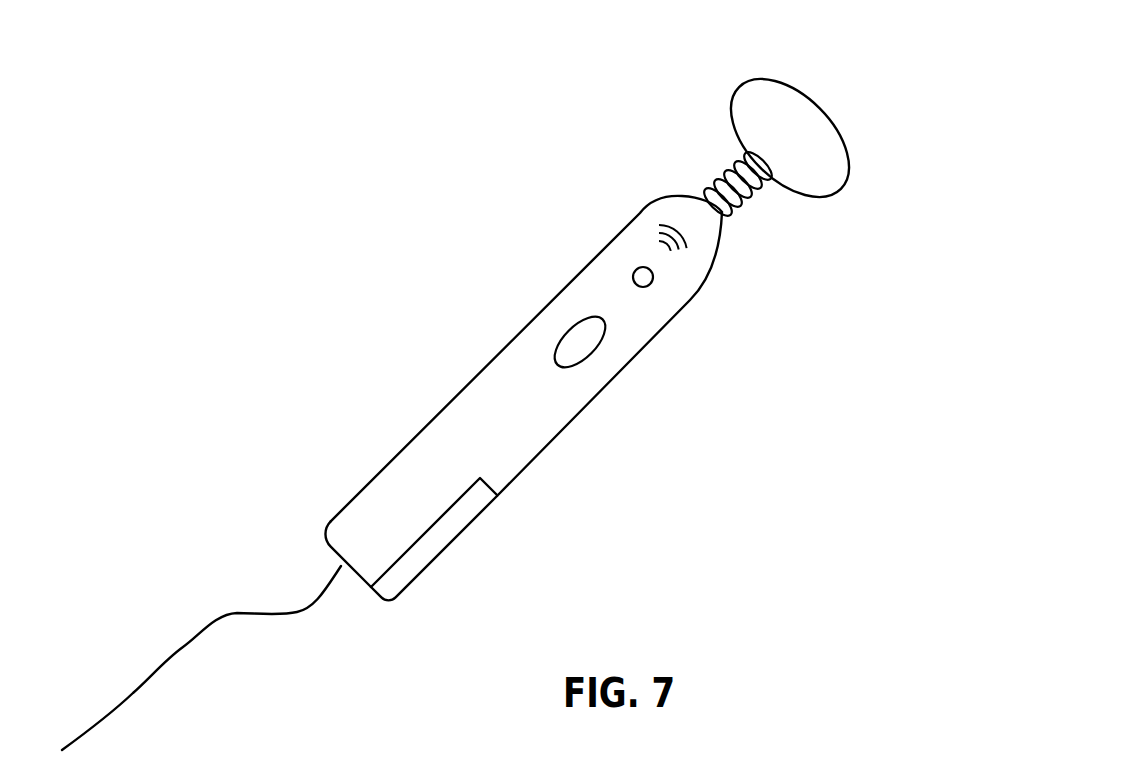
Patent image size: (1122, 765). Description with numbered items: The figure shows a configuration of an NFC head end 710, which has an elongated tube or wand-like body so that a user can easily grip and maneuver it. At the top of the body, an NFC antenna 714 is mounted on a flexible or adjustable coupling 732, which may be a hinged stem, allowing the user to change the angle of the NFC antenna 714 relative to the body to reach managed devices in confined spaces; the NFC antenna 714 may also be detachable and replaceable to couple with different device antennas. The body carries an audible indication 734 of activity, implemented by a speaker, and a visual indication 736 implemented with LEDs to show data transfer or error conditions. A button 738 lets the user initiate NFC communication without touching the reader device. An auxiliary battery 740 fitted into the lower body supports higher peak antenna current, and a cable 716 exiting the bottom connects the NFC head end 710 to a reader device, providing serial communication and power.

The NFC head end 710 is at (149, 57).
The NFC antenna 714 is at (835, 147).
The cable 716 is at (297, 612).
The flexible or adjustable coupling 732 is at (748, 198).
The audible indication 734 is at (658, 230).
The visual indication 736 is at (653, 277).
The button 738 is at (598, 352).
The auxiliary battery 740 is at (443, 553).